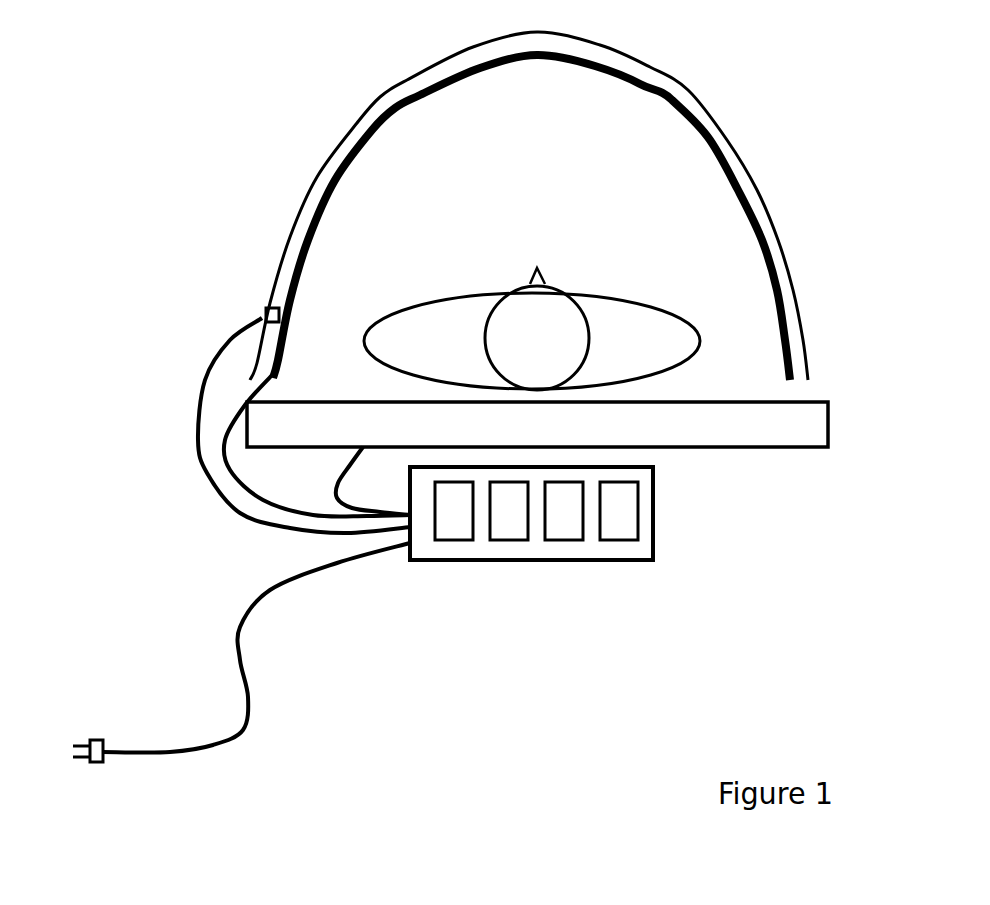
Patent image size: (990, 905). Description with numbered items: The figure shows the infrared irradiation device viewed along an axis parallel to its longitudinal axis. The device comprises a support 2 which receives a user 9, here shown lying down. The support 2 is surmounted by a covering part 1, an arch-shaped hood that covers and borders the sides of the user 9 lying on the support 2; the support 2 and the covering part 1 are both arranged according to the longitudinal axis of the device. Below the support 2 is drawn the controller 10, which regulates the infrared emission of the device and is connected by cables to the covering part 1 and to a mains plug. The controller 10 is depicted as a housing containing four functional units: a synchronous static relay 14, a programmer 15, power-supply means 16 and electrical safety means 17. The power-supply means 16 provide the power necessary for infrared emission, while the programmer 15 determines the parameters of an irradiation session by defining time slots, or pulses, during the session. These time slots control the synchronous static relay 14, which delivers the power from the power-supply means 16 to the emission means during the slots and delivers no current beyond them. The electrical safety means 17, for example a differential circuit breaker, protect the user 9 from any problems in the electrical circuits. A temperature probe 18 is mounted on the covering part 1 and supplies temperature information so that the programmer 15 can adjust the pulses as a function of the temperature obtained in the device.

The covering part 1 is at (708, 88).
The support 2 is at (852, 402).
The user 9 is at (430, 281).
The controller 10 is at (655, 558).
The synchronous static relay 14 is at (453, 542).
The programmer 15 is at (507, 542).
The power-supply means 16 is at (552, 542).
The electrical safety means 17 is at (620, 542).
The temperature probe 18 is at (265, 306).